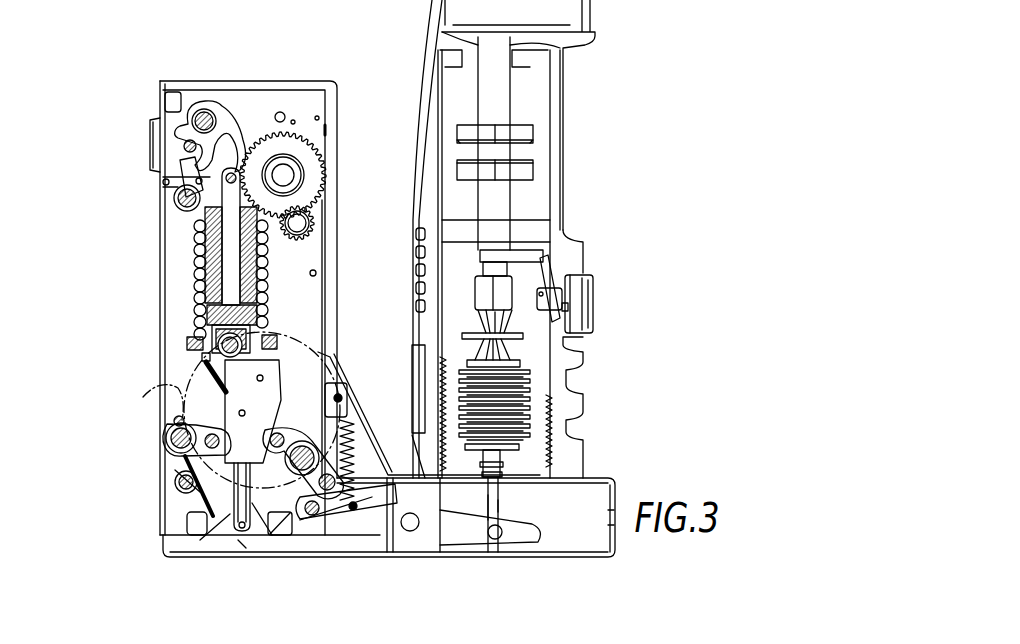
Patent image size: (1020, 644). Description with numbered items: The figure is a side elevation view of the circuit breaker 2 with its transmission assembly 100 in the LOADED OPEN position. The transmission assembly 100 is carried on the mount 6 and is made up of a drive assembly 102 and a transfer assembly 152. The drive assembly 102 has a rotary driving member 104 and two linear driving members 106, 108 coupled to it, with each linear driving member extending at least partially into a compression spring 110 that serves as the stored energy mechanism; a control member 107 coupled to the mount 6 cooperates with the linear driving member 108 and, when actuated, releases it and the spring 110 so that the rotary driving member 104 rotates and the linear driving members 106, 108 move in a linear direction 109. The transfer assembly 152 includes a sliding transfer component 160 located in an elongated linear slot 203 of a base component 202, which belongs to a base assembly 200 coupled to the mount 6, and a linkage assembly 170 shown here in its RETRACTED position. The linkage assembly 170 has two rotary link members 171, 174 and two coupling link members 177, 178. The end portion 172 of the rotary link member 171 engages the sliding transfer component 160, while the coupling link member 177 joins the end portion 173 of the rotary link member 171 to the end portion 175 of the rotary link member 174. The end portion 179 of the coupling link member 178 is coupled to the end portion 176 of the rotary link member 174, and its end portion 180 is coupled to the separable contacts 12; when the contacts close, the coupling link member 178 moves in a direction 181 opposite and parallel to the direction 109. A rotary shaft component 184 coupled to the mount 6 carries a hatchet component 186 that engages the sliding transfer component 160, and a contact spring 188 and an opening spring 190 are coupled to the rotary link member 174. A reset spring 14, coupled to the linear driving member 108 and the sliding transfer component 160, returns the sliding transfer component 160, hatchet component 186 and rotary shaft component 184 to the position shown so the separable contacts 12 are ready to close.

The circuit breaker 2 is at (50, 42).
The transmission assembly 100 is at (106, 85).
The mount 6 is at (257, 96).
The drive assembly 102 is at (102, 150).
The rotary driving member 104 is at (216, 120).
The control member 107 is at (168, 189).
The compression spring 110 is at (192, 232).
The linear driving member 106 is at (226, 264).
The linear direction 109 is at (290, 327).
The linear driving member 108 is at (188, 341).
The transfer assembly 152 is at (130, 388).
The sliding transfer component 160 is at (296, 370).
The rotary link member 171 is at (292, 360).
The reset spring 14 is at (209, 378).
The end portion 172 is at (274, 435).
The opening spring 190 is at (343, 428).
The end portion 173 is at (352, 462).
The rotary shaft component 184 is at (168, 438).
The hatchet component 186 is at (178, 470).
The base component 202 is at (230, 514).
The elongated linear slot 203 is at (241, 546).
The base assembly 200 is at (240, 568).
The coupling link member 177 is at (246, 533).
The end portion 175 is at (305, 522).
The linkage assembly 170 is at (366, 566).
The rotary link member 174 is at (456, 550).
The end portion 176 is at (531, 540).
The end portion 179 is at (490, 516).
The end portion 180 is at (498, 489).
The coupling link member 178 is at (508, 506).
The separable contacts 12 is at (522, 131).
The direction 181 is at (620, 270).
The contact spring 188 is at (534, 400).